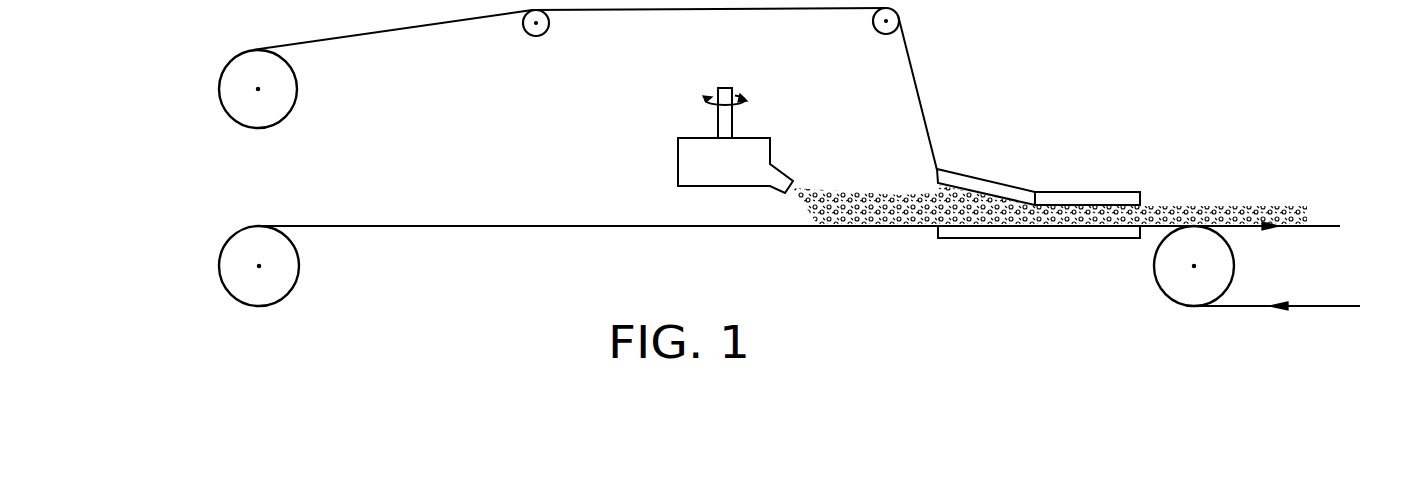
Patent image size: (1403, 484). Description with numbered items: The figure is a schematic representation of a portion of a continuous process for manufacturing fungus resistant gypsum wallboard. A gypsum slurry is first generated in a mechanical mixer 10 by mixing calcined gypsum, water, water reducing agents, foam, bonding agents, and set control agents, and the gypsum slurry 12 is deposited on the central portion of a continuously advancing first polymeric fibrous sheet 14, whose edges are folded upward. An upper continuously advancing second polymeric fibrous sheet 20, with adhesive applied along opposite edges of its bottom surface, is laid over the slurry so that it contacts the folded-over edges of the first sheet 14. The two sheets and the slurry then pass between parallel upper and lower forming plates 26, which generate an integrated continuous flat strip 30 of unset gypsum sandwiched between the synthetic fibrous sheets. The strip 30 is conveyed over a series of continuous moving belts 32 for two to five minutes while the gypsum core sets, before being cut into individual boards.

The mechanical mixer 10 is at (740, 174).
The gypsum slurry 12 is at (838, 173).
The first polymeric fibrous sheet 14 is at (366, 222).
The second polymeric fibrous sheet 20 is at (375, 32).
The forming plates 26 is at (1095, 192).
The flat strip 30 is at (1240, 205).
The continuous moving belts 32 is at (1322, 307).